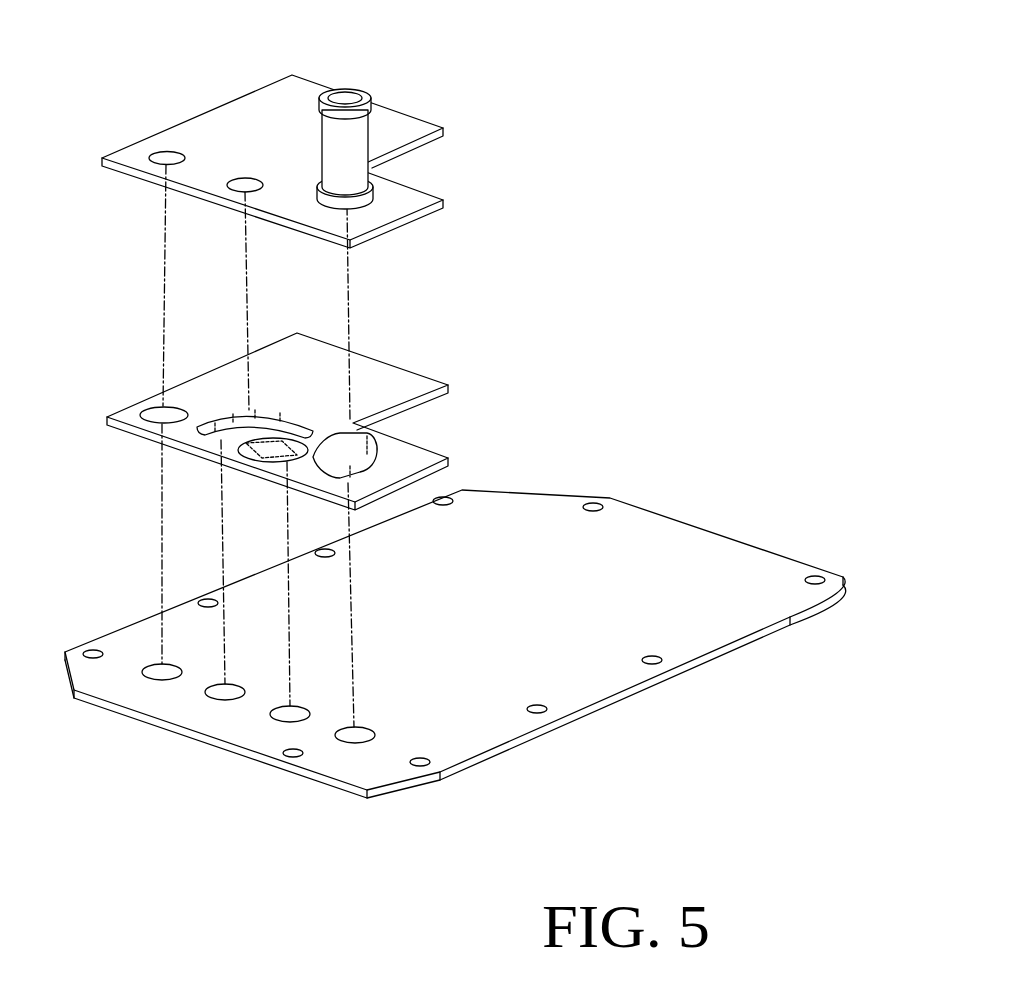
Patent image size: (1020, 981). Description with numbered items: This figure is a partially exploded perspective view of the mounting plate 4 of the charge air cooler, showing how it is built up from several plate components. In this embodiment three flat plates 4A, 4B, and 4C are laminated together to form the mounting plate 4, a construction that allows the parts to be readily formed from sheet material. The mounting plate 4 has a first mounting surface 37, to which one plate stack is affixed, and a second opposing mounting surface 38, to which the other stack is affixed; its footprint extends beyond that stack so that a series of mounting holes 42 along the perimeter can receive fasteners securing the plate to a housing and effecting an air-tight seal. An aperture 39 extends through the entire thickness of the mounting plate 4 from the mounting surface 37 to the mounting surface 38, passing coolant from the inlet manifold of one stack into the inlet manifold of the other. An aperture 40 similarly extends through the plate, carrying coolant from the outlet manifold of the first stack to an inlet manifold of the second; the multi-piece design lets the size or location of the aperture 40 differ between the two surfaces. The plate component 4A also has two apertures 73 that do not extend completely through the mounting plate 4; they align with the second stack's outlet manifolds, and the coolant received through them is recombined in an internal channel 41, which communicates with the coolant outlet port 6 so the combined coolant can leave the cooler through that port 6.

The mounting plate 4 is at (445, 446).
The plate component 4A is at (455, 689).
The plate component 4B is at (398, 360).
The plate component 4C is at (375, 125).
The coolant outlet port 6 is at (342, 140).
The first mounting surface 37 is at (263, 115).
The second mounting surface 38 is at (400, 796).
The aperture 39 is at (234, 183).
The aperture 40 is at (157, 156).
The internal channel 41 is at (277, 417).
The mounting holes 42 is at (593, 502).
The apertures 73 is at (213, 690).